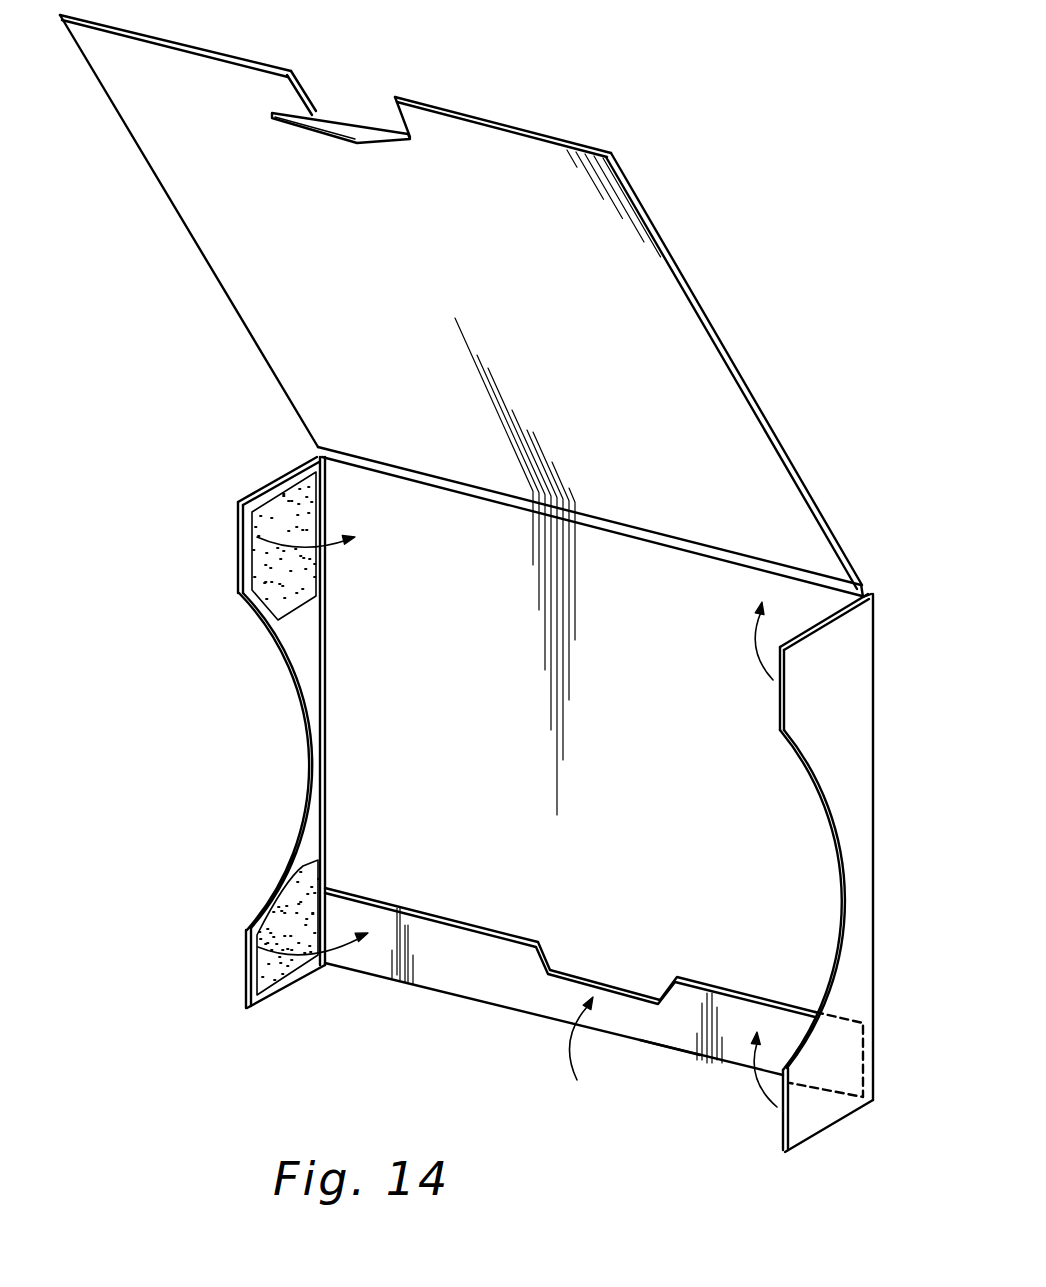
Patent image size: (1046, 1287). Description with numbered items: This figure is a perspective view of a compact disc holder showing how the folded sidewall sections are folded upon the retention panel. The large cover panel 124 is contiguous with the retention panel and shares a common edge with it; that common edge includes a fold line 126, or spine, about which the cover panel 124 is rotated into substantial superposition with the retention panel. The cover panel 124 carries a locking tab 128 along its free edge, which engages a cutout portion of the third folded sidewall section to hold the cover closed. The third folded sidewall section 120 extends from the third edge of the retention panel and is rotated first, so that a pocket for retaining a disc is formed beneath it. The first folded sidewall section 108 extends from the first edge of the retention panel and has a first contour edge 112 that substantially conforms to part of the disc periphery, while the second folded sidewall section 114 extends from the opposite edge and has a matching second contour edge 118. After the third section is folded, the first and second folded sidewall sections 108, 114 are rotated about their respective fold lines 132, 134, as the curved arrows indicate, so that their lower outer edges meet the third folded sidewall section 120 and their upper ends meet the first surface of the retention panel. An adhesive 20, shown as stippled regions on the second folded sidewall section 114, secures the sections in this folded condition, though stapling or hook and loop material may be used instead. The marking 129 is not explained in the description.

The adhesive 20 is at (257, 567).
The first folded sidewall section 108 is at (847, 678).
The first contour edge 112 is at (840, 877).
The second folded sidewall section 114 is at (287, 632).
The second contour edge 118 is at (307, 758).
The third folded sidewall section 120 is at (475, 973).
The cover panel 124 is at (657, 230).
The fold line 126 is at (863, 583).
The locking tab 128 is at (335, 122).
The fold line 129 is at (673, 1057).
The fold line 132 is at (873, 793).
The fold line 134 is at (323, 667).